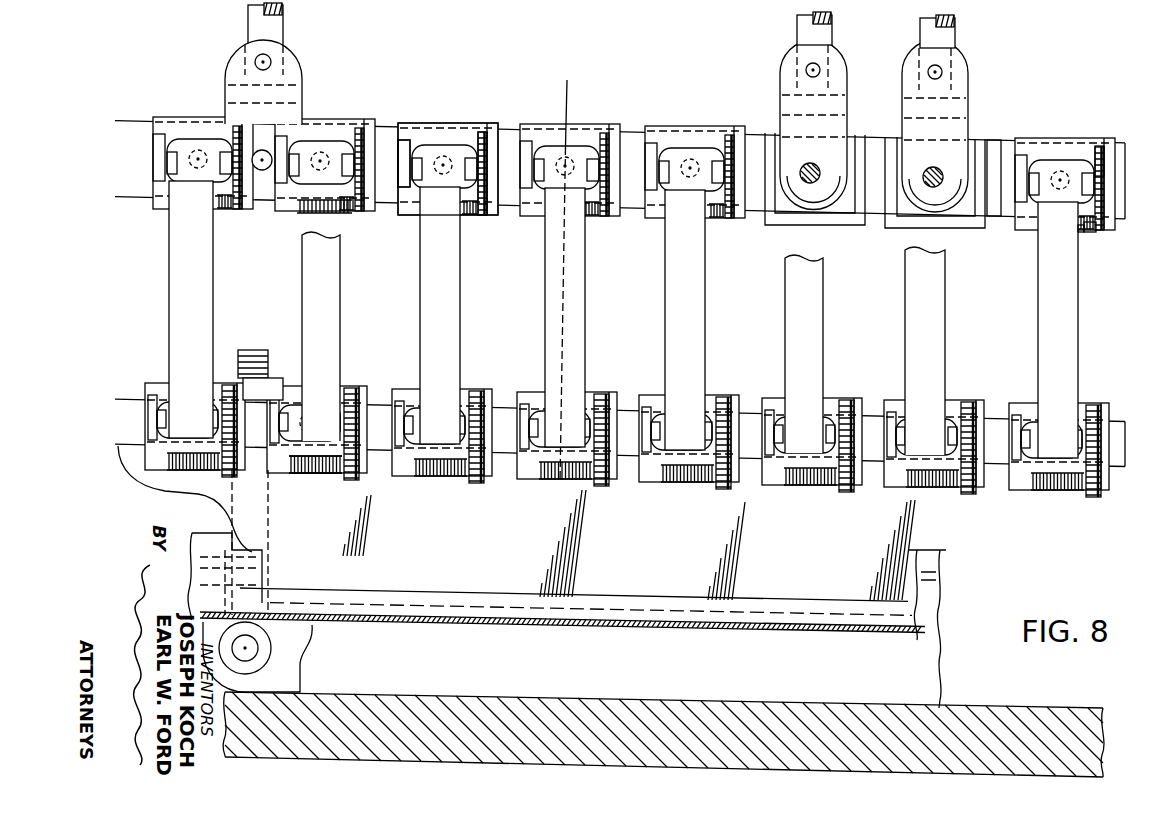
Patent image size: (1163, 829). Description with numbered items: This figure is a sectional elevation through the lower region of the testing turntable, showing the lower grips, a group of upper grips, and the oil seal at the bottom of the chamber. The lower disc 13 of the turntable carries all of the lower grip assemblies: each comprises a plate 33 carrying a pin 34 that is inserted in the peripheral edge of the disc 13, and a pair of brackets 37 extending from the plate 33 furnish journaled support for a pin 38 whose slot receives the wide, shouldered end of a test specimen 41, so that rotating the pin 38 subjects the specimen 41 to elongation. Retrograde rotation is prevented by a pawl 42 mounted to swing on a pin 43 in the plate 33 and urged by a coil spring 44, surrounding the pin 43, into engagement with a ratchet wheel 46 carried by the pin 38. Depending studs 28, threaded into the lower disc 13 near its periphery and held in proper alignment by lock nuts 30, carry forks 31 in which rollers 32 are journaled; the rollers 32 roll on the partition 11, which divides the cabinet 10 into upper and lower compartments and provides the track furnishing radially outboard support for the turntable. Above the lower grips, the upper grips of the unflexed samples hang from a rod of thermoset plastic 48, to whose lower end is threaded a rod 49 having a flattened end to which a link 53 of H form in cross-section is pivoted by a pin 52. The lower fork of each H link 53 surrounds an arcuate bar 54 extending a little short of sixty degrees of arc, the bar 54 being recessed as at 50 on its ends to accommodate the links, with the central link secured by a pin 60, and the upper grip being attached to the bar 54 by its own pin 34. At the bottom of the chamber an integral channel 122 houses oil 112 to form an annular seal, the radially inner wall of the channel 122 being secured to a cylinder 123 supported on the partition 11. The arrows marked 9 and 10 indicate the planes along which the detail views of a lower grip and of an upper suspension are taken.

The section line 9- 9 is at (567, 80).
The cabinet 10 is at (935, 30).
The partition 11 is at (527, 703).
The lower disc 13 is at (141, 406).
The depending studs 28 is at (252, 350).
The lock nuts 30 is at (278, 378).
The forks 31 is at (260, 648).
The rollers 32 is at (257, 660).
The plate 33 is at (432, 124).
The pin 34 is at (935, 168).
The brackets 37 is at (406, 142).
The pin 38 is at (474, 146).
The test specimen 41 is at (340, 307).
The pawl 42 is at (1095, 233).
The pin 43 is at (1083, 233).
The coil spring 44 is at (315, 475).
The ratchet wheel 46 is at (1102, 156).
The rod of thermoset plastic 48 is at (280, 15).
The rod 49 is at (955, 32).
The recess 50 is at (790, 210).
The pin 52 is at (805, 68).
The link 53 is at (300, 68).
The arcuate bar 54 is at (763, 138).
The pin 60 is at (262, 170).
The oil 112 is at (935, 615).
The channel 122 is at (795, 634).
The cylinder 123 is at (938, 673).